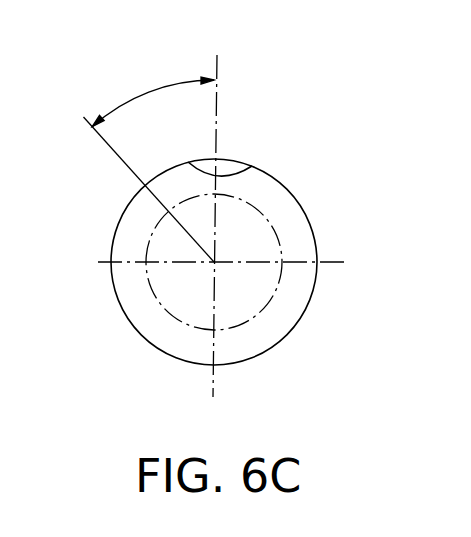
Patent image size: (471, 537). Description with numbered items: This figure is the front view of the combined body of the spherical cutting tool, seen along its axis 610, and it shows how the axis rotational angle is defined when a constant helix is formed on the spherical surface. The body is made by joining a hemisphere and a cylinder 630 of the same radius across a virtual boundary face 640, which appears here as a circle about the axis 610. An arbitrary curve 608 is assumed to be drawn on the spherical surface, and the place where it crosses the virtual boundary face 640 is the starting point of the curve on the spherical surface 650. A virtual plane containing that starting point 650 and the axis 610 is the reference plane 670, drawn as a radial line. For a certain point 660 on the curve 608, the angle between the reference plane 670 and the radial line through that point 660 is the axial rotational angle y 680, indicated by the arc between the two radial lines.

The arbitrary curve 608 is at (252, 170).
The axis 610 is at (207, 266).
The cylinder 630 is at (285, 227).
The virtual boundary face 640 is at (214, 330).
The starting point of the curve on the spherical surface 650 is at (215, 159).
The certain point 660 is at (168, 210).
The reference plane 670 is at (218, 63).
The axial rotational angle y 680 is at (148, 87).